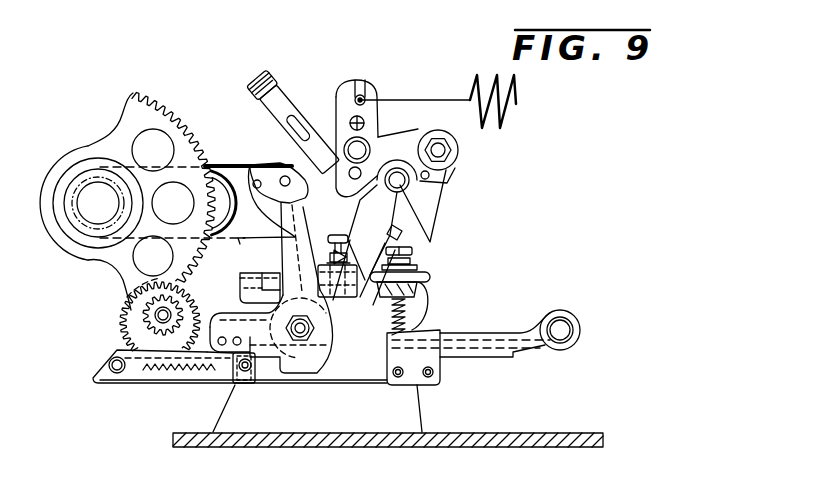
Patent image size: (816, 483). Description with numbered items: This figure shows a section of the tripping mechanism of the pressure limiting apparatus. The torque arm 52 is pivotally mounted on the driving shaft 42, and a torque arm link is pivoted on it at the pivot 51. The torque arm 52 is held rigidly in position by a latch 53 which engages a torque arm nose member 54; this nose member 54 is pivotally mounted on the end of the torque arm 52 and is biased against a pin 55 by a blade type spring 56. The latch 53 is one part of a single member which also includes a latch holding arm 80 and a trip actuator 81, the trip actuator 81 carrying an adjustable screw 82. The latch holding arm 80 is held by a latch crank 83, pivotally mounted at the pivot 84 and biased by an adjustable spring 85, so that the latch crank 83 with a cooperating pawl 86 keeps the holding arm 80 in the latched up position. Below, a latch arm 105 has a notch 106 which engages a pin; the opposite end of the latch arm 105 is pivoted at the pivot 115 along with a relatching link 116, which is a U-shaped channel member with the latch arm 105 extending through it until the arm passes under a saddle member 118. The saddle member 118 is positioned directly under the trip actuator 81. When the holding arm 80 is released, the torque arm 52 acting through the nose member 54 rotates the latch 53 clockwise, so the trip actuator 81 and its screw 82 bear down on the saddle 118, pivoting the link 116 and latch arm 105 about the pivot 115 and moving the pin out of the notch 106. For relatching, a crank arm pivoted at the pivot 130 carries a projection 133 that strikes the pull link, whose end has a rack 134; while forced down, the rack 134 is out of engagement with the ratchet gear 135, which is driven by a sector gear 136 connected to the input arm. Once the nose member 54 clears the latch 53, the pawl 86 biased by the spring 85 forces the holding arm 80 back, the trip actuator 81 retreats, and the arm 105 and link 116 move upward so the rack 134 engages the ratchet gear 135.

The driving shaft 42 is at (93, 212).
The pivot 51 is at (217, 172).
The torque arm 52 is at (238, 238).
The latch 53 is at (302, 215).
The torque arm nose member 54 is at (297, 185).
The pin 55 is at (256, 165).
The blade type spring 56 is at (246, 163).
The latch holding arm 80 is at (387, 195).
The trip actuator 81 is at (431, 280).
The adjustable screw 82 is at (415, 250).
The latch crank 83 is at (417, 130).
The pivot 84 is at (373, 128).
The adjustable spring 85 is at (517, 92).
The pawl 86 is at (438, 192).
The latch arm 105 is at (241, 287).
The notch 106 is at (280, 291).
The pivot 115 is at (563, 333).
The relatching link 116 is at (270, 373).
The saddle member 118 is at (442, 333).
The pivot 130 is at (300, 338).
The projection 133 is at (233, 352).
The rack 134 is at (152, 392).
The ratchet gear 135 is at (120, 333).
The sector gear 136 is at (133, 95).